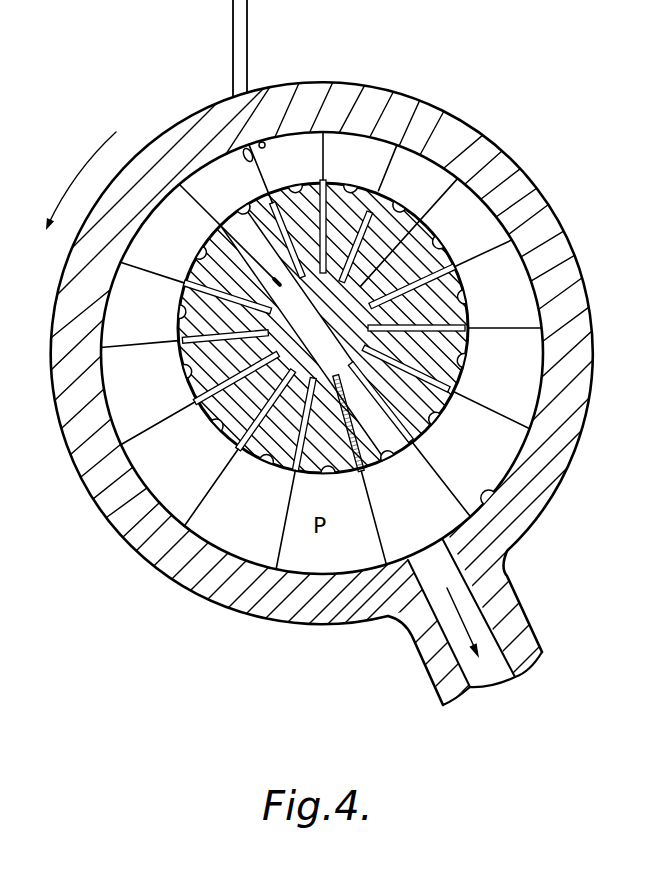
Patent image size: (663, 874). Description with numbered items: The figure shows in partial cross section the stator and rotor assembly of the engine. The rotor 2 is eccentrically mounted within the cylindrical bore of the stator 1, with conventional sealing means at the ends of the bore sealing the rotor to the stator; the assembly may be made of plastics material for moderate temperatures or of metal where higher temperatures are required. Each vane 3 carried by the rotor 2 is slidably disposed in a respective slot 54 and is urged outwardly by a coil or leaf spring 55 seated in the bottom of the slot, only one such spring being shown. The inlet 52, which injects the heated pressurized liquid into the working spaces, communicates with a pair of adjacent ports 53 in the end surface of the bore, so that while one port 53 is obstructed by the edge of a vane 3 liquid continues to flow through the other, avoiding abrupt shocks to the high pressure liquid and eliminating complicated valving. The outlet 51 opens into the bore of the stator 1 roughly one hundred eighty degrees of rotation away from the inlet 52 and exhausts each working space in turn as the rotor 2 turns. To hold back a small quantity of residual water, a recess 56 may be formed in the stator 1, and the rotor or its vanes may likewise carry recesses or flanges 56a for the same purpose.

The stator 1 is at (522, 184).
The rotor 2 is at (390, 198).
The vane 3 is at (484, 403).
The outlet 51 is at (497, 688).
The inlet 52 is at (247, 55).
The port 53 is at (264, 149).
The slot 54 is at (186, 313).
The spring 55 is at (338, 475).
The recess 56 is at (497, 499).
The recess 56a is at (195, 249).